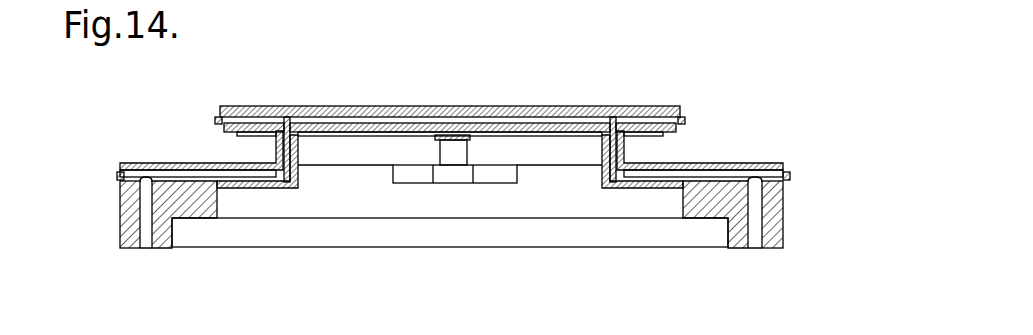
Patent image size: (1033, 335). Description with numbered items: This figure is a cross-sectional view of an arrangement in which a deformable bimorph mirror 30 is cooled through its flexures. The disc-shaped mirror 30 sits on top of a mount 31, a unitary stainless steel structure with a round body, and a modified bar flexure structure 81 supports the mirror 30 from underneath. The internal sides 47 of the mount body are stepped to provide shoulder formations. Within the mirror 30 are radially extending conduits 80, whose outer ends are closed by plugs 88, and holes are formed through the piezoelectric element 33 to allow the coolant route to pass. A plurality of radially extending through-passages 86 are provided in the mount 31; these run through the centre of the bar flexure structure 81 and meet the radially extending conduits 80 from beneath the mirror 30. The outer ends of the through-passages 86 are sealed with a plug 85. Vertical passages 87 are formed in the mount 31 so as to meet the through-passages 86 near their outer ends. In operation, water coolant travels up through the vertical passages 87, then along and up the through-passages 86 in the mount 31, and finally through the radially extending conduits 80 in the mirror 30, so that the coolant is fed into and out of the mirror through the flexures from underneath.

The deformable bimorph mirror 30 is at (547, 104).
The mount 31 is at (205, 252).
The piezoelectric element 33 is at (390, 132).
The internal sides 47 is at (723, 220).
The radially extending conduits 80 is at (243, 107).
The bar flexure structure 81 is at (695, 162).
The plug 85 is at (119, 177).
The through-passages 86 is at (180, 175).
The vertical passages 87 is at (145, 250).
The plug 88 is at (216, 120).